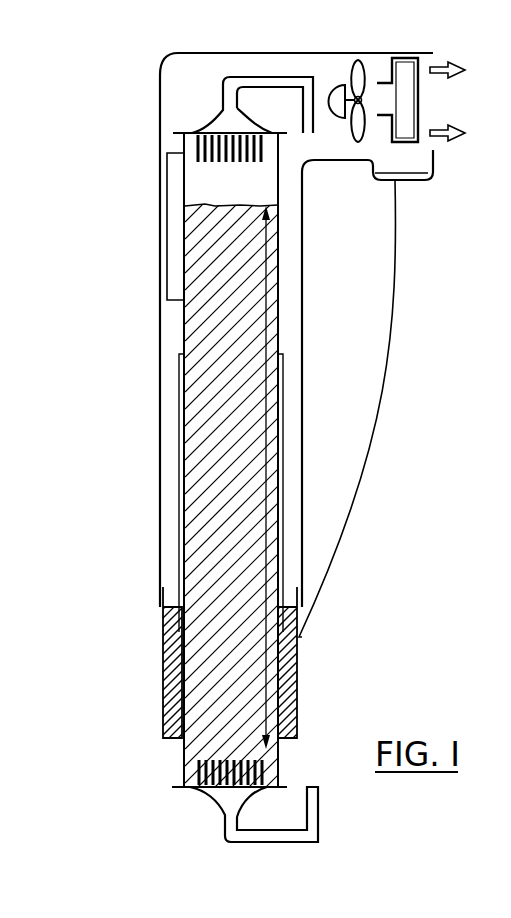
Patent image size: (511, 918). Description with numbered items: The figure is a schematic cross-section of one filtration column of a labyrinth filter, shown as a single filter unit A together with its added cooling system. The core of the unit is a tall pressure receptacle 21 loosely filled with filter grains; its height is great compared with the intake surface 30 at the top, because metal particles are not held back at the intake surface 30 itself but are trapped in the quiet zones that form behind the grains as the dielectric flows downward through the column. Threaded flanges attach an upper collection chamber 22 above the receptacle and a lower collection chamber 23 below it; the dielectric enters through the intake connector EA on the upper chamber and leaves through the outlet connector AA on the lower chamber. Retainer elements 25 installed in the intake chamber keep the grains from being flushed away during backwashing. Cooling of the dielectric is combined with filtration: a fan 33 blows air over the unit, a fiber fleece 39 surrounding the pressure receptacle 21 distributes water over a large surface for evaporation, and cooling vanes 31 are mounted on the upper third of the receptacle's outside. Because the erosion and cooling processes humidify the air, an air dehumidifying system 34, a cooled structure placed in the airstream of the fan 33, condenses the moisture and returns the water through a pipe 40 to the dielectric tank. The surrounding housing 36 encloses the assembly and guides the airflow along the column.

The pressure receptacle 21 is at (184, 307).
The upper collection chamber 22 is at (232, 117).
The lower collection chamber 23 is at (222, 797).
The retainer elements 25 is at (205, 160).
The intake surface 30 is at (210, 206).
The cooling vanes 31 is at (173, 248).
The fan 33 is at (343, 99).
The air dehumidifying system 34 is at (421, 84).
The housing 36 is at (157, 524).
The fiber fleece 39 is at (180, 430).
The pipe 40 is at (162, 737).
The filter unit A is at (313, 648).
The intake connector EA is at (200, 113).
The outlet connector AA is at (226, 834).